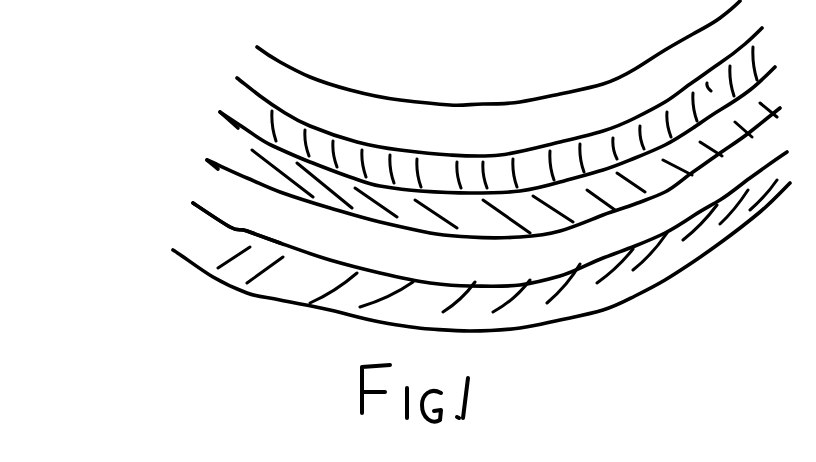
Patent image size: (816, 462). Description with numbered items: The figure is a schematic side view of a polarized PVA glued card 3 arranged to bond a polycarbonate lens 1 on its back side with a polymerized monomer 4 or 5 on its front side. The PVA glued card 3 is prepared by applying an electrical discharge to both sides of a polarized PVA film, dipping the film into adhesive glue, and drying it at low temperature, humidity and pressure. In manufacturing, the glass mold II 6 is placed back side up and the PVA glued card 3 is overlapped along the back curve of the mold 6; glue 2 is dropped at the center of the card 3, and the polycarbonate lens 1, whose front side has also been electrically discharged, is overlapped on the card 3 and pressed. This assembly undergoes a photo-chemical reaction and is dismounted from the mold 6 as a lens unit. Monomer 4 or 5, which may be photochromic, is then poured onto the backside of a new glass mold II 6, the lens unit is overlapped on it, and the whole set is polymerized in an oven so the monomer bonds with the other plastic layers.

The polycarbonate lens 1 is at (267, 73).
The glue 2 is at (243, 105).
The PVA glued card 3 is at (232, 149).
The monomer 4 is at (207, 190).
The monomer 5 is at (193, 203).
The glass mold II 6 is at (193, 240).